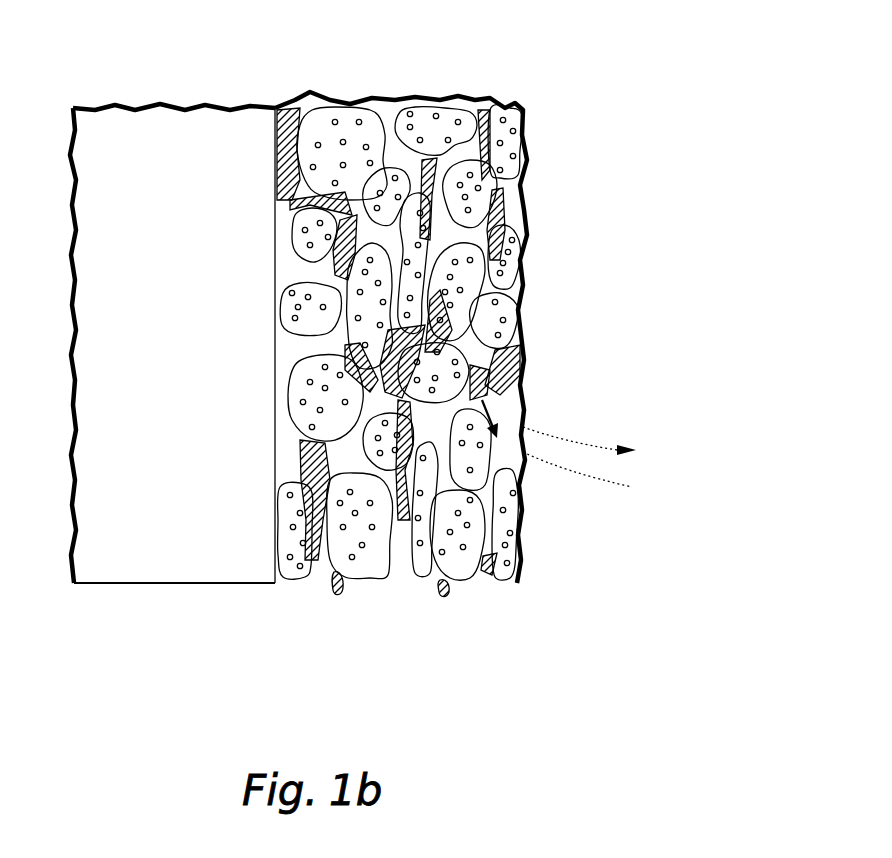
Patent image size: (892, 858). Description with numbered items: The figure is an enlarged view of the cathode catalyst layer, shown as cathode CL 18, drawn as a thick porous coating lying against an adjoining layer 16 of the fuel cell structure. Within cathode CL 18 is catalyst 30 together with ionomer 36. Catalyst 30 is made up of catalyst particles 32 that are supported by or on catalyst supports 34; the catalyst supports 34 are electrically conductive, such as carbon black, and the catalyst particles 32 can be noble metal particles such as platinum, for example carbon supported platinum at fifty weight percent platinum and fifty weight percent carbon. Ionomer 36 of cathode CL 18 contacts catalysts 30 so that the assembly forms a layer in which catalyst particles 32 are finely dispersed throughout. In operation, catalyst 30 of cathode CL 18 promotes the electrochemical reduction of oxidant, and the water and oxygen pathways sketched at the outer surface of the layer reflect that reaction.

The substrate 16 is at (183, 583).
The cathode catalyst layer 18 is at (286, 606).
The catalyst 30 is at (468, 94).
The catalyst particles 32 is at (413, 110).
The catalyst support 34 is at (480, 112).
The ionomer 36 is at (527, 205).